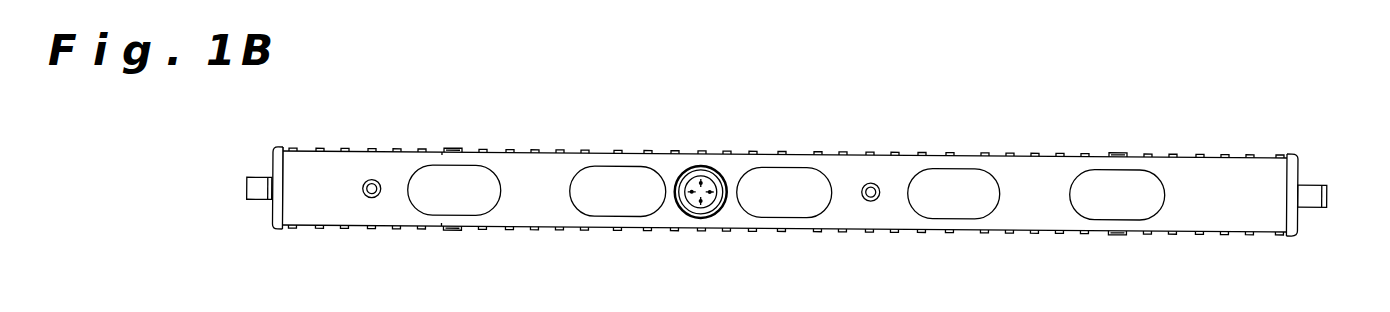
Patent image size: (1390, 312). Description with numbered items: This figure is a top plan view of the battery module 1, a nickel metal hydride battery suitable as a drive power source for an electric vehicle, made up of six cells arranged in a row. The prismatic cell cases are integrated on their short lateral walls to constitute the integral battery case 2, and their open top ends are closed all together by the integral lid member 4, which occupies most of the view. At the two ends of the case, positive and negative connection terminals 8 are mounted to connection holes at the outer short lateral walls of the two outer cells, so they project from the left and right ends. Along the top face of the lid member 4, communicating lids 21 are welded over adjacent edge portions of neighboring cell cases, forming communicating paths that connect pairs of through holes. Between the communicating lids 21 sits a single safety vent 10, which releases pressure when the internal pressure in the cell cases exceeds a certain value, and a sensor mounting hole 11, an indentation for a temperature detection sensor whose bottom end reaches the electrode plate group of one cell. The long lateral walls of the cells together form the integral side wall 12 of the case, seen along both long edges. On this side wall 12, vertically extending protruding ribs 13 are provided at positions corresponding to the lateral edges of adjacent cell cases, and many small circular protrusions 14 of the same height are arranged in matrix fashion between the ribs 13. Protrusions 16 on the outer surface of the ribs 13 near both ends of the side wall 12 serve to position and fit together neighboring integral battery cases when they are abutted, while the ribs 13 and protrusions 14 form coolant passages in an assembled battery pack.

The battery module 1 is at (785, 200).
The integral battery case 2 is at (255, 209).
The lid member 4 is at (305, 212).
The connection terminals 8 is at (250, 188).
The safety vent 10 is at (702, 180).
The sensor mounting hole 11 is at (370, 179).
The side wall 12 is at (1022, 153).
The protruding ribs 13 is at (443, 149).
The circular protrusions 14 is at (400, 148).
The protrusions 16 is at (456, 146).
The communicating lids 21 is at (478, 188).